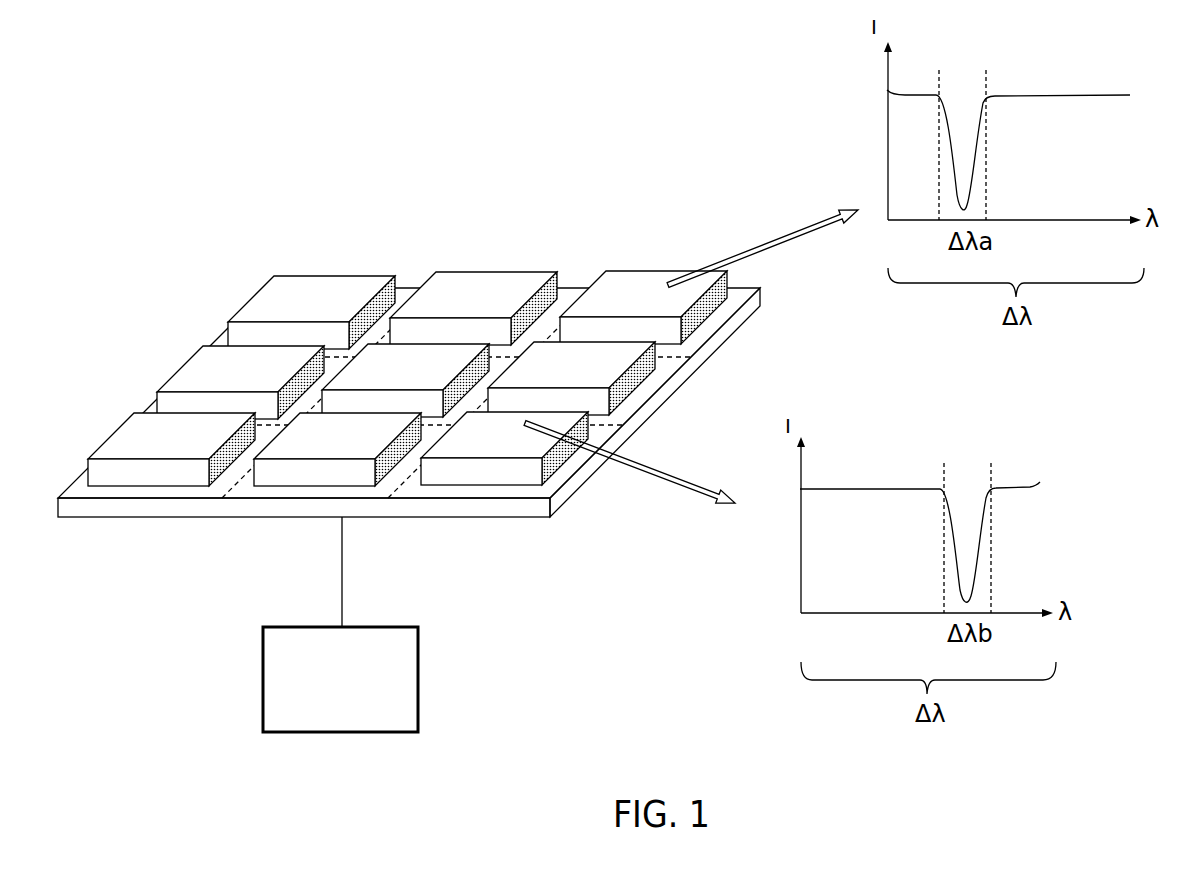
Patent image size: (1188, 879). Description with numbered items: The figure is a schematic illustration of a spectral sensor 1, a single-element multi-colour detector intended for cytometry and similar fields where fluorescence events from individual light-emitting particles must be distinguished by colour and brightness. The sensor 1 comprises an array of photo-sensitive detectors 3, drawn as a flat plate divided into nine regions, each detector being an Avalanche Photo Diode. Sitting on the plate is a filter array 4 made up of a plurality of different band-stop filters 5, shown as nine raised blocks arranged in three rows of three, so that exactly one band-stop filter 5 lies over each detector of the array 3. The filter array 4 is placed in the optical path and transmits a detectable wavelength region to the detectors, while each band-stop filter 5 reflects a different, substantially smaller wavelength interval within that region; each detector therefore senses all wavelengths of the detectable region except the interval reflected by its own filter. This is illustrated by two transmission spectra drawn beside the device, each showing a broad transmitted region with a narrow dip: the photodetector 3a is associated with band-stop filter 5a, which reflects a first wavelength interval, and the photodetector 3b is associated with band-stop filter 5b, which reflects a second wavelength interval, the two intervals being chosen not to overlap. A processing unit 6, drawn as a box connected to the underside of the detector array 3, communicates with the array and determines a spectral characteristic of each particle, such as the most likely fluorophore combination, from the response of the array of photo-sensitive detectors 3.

The spectral sensor 1 is at (363, 149).
The array of photo-sensitive detectors 3 is at (97, 510).
The photodetector 3a is at (728, 305).
The photodetector 3b is at (553, 483).
The filter array 4 is at (396, 391).
The band-stop filter 5 is at (285, 292).
The band-stop filter 5a is at (645, 283).
The band-stop filter 5b is at (485, 443).
The processing unit 6 is at (341, 697).